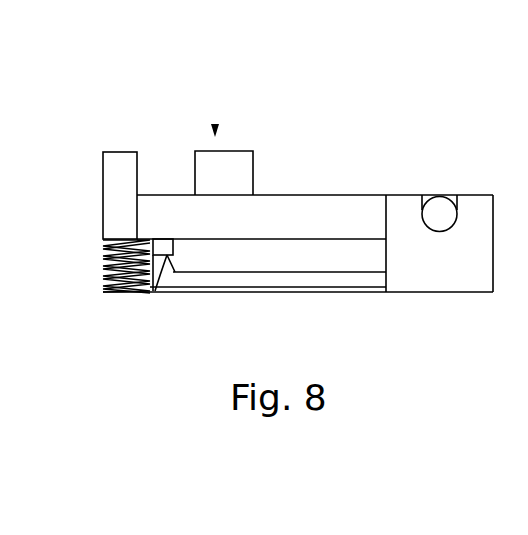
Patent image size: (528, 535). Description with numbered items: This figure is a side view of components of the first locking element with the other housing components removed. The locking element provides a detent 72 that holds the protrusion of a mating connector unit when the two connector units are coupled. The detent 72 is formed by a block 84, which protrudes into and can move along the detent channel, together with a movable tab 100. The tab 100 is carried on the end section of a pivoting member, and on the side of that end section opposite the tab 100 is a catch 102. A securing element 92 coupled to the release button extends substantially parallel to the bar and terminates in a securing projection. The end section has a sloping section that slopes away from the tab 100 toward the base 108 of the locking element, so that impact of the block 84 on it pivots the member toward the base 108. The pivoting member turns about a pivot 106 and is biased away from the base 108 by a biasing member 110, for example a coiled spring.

The detent 72 is at (214, 128).
The block 84 is at (243, 175).
The securing element 92 is at (288, 287).
The movable tab 100 is at (115, 170).
The catch 102 is at (158, 286).
The pivot 106 is at (440, 196).
The base 108 is at (333, 289).
The biasing member 110 is at (103, 264).